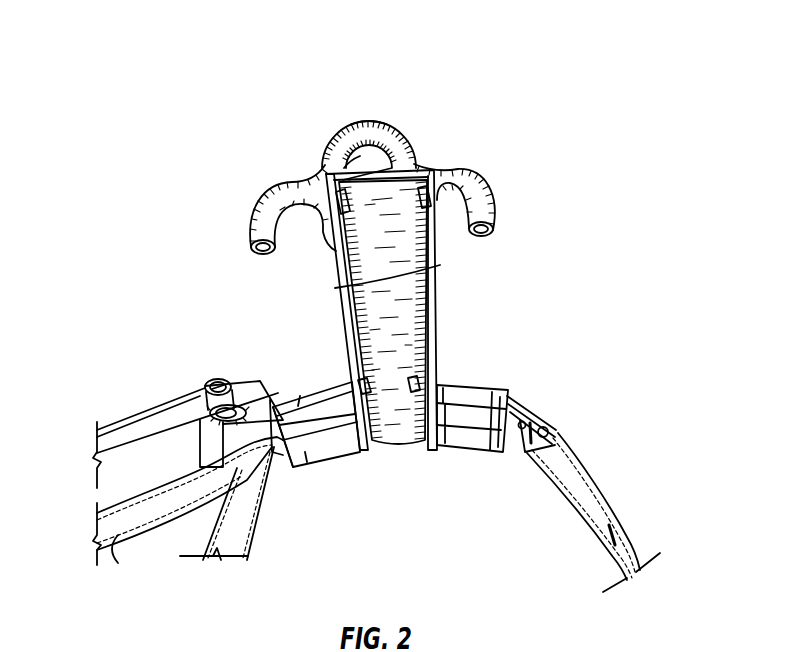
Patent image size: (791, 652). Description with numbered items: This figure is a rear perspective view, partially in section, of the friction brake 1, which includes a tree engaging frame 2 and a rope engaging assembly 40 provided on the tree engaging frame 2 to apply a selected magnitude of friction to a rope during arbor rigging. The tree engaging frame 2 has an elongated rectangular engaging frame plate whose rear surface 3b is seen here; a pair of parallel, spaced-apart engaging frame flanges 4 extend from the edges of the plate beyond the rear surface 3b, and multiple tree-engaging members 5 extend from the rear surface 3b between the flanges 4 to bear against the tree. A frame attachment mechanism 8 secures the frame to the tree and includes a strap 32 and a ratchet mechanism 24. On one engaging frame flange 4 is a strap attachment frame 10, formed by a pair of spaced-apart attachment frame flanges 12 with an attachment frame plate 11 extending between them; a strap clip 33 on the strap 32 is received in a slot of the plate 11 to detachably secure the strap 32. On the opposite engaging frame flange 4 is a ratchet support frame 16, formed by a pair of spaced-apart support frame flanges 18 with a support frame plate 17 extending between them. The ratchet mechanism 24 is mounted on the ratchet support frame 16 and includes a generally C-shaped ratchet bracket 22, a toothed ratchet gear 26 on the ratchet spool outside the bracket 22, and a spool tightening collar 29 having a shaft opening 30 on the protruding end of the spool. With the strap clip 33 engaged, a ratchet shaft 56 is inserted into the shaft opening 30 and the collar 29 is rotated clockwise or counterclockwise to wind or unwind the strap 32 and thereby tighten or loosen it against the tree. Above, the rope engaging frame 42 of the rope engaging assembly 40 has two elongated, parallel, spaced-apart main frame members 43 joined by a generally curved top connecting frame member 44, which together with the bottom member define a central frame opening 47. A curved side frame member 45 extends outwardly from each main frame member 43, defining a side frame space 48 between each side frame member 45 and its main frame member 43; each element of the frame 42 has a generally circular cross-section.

The friction brake 1 is at (545, 74).
The tree engaging frame 2 is at (456, 284).
The rear surface 3b is at (405, 308).
The engaging frame flanges 4 is at (335, 288).
The tree-engaging members 5 is at (337, 196).
The frame attachment mechanism 8 is at (162, 599).
The strap attachment frame 10 is at (507, 374).
The attachment frame plate 11 is at (461, 420).
The attachment frame flanges 12 is at (470, 390).
The ratchet support frame 16 is at (323, 480).
The support frame plate 17 is at (317, 432).
The support frame flanges 18 is at (273, 438).
The ratchet bracket 22 is at (262, 372).
The ratchet mechanism 24 is at (193, 371).
The toothed ratchet gear 26 is at (180, 413).
The spool tightening collar 29 is at (190, 390).
The shaft opening 30 is at (203, 442).
The strap 32 is at (625, 546).
The strap clip 33 is at (520, 418).
The rope engaging assembly 40 is at (304, 96).
The rope engaging frame 42 is at (392, 113).
The main frame members 43 is at (294, 181).
The top connecting frame member 44 is at (358, 128).
The side frame members 45 is at (255, 204).
The central frame opening 47 is at (339, 155).
The side frame space 48 is at (283, 254).
The ratchet shaft 56 is at (100, 460).